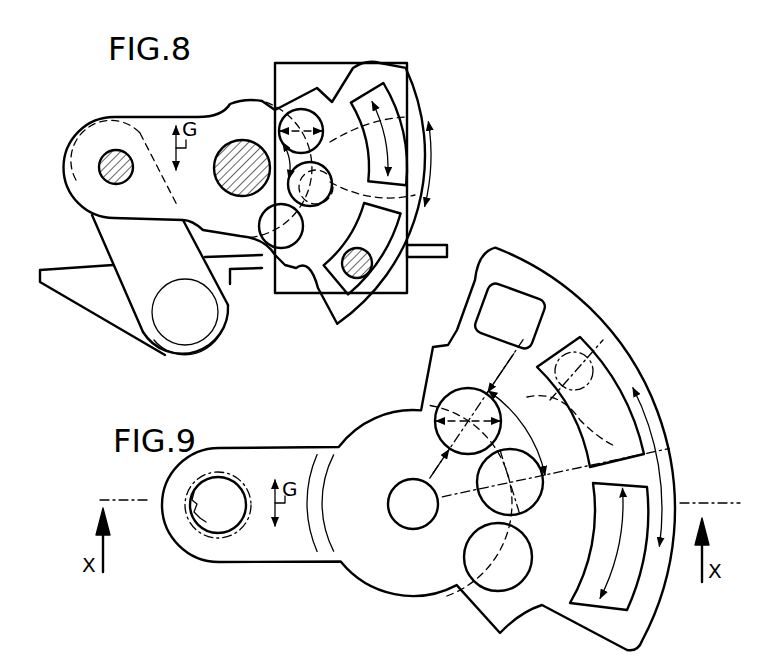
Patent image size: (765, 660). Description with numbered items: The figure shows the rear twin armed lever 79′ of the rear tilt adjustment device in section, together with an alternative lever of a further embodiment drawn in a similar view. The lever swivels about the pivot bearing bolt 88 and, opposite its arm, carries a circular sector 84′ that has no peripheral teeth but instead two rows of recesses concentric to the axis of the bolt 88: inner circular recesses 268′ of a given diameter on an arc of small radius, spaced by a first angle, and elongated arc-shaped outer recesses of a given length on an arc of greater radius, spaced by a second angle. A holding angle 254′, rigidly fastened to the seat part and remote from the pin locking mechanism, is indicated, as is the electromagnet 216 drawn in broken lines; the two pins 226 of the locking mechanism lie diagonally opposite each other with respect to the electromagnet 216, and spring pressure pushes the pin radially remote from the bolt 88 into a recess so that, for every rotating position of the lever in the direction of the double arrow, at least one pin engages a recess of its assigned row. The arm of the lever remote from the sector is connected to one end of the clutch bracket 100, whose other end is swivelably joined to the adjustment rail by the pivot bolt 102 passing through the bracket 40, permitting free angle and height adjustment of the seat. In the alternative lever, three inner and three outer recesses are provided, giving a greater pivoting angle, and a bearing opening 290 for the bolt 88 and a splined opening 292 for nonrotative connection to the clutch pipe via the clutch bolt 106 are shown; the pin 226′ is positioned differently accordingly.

In FIG. 8, the bracket 40 is at (110, 322).
In FIG. 8, the twin armed lever 79′ is at (418, 158).
In FIG. 8, the circular sector 84′ is at (400, 80).
In FIG. 8, the pivot bearing bolt 88 is at (236, 141).
In FIG. 8, the clutch bracket 100 is at (108, 240).
In FIG. 8, the pivot bolt 102 is at (198, 352).
In FIG. 8, the clutch bolt 106 is at (122, 150).
In FIG. 8, the electromagnet 216 is at (421, 197).
In FIG. 9, the electromagnet 216 is at (652, 453).
In FIG. 8, the pin 226 is at (416, 128).
In FIG. 9, the pin 226 is at (612, 356).
In FIG. 9, the roller 226′ is at (473, 588).
In FIG. 8, the holding angle 254′ is at (415, 262).
In FIG. 8, the inner circular recesses 268′ is at (300, 108).
In FIG. 9, the inner circular recesses 268′ is at (470, 572).
In FIG. 9, the bearing opening 290 is at (404, 516).
In FIG. 9, the splined opening 292 is at (212, 524).